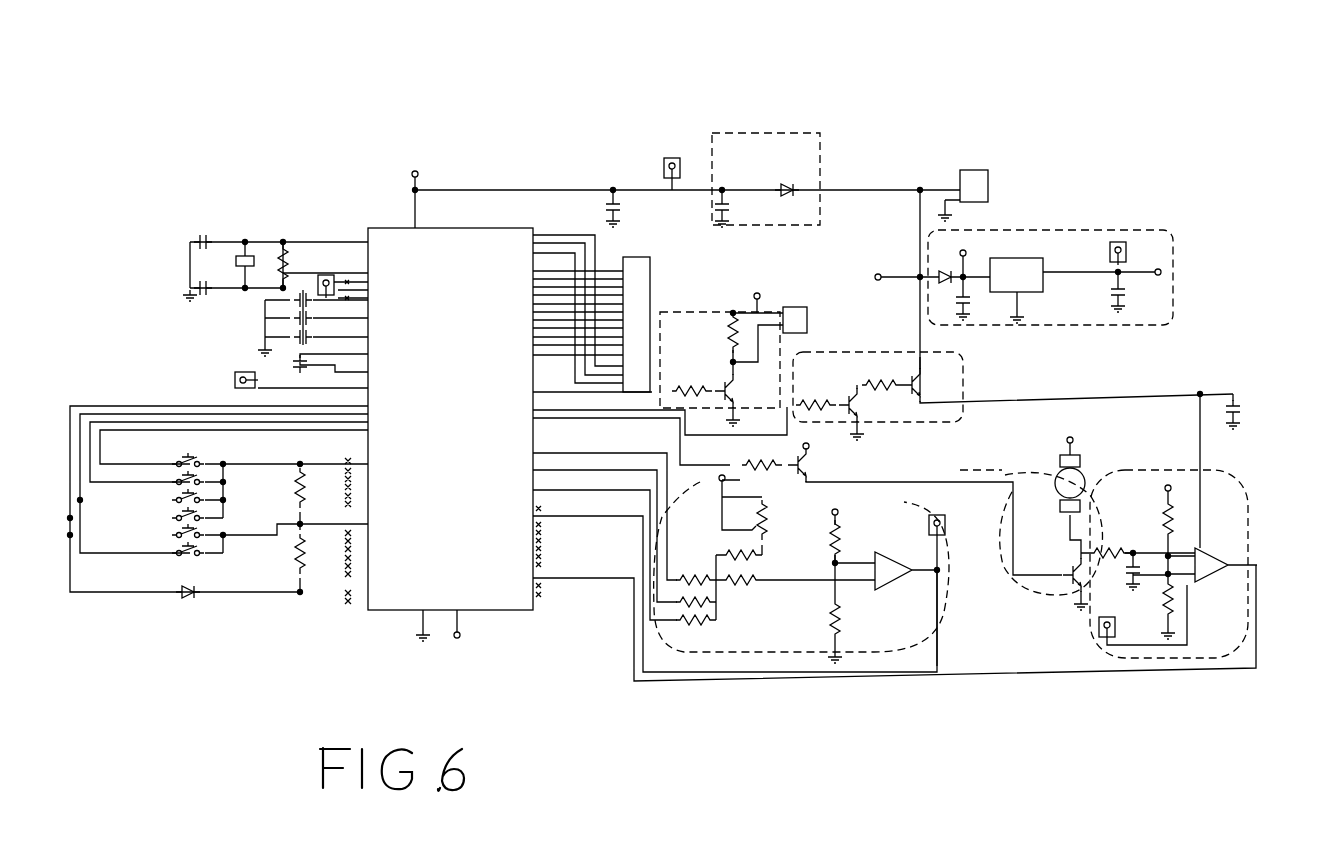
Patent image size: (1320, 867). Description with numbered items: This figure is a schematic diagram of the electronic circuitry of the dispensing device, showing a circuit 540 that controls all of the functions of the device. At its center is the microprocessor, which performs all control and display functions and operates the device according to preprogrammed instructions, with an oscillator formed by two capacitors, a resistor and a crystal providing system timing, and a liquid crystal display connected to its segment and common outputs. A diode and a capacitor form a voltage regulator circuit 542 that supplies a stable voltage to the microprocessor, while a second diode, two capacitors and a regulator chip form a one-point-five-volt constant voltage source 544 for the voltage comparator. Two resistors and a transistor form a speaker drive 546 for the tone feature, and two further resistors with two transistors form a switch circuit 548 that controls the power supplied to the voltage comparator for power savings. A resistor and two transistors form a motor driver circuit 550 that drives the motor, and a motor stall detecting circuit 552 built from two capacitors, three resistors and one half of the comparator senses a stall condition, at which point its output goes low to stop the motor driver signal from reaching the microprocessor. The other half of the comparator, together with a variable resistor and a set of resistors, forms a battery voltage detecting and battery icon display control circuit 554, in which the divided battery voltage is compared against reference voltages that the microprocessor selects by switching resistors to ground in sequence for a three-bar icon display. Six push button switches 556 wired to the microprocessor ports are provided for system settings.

The circuit 540 is at (827, 97).
The voltage regulator circuit 542 is at (820, 168).
The 1.5-volt constant voltage source 544 is at (1078, 220).
The speaker drive 546 is at (682, 304).
The switch circuit 548 is at (965, 386).
The motor driver circuit 550 is at (1045, 593).
The motor stall detecting circuit 552 is at (1222, 480).
The battery voltage detecting and battery icon display control circuit 554 is at (800, 658).
The push button switches 556 is at (225, 543).